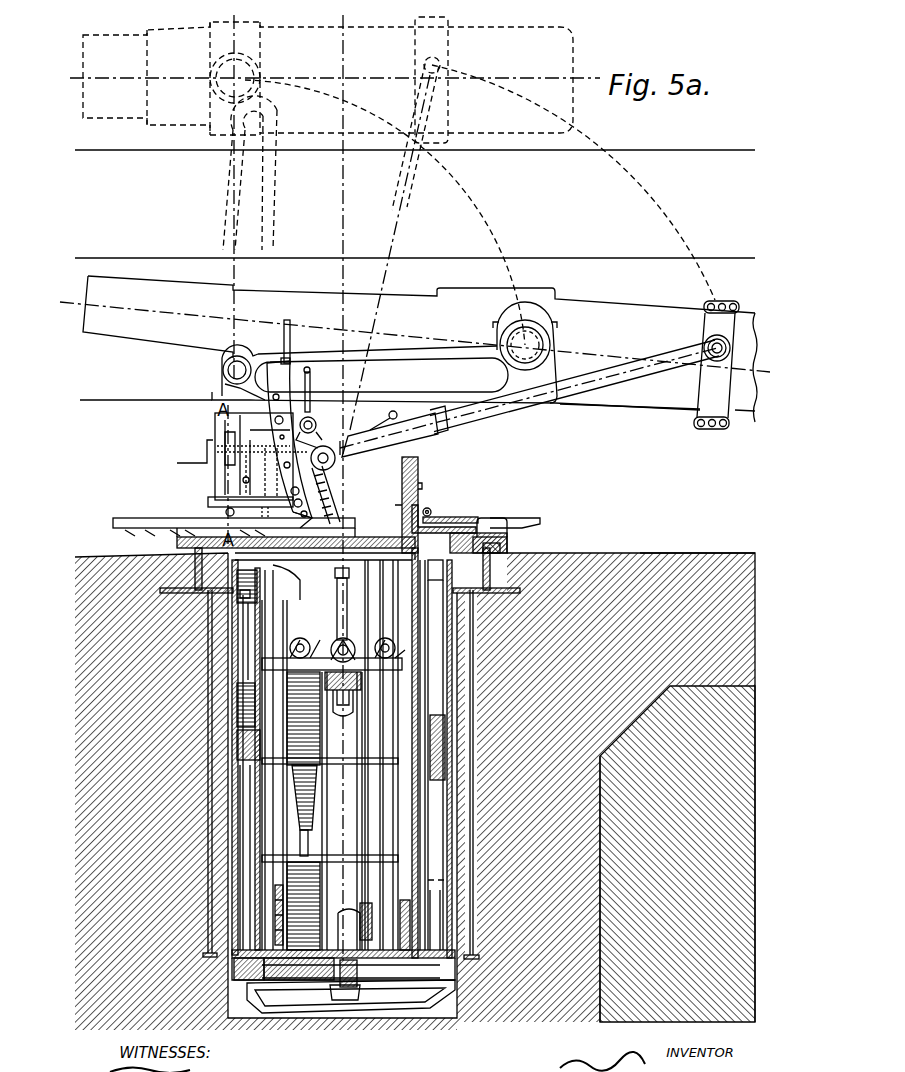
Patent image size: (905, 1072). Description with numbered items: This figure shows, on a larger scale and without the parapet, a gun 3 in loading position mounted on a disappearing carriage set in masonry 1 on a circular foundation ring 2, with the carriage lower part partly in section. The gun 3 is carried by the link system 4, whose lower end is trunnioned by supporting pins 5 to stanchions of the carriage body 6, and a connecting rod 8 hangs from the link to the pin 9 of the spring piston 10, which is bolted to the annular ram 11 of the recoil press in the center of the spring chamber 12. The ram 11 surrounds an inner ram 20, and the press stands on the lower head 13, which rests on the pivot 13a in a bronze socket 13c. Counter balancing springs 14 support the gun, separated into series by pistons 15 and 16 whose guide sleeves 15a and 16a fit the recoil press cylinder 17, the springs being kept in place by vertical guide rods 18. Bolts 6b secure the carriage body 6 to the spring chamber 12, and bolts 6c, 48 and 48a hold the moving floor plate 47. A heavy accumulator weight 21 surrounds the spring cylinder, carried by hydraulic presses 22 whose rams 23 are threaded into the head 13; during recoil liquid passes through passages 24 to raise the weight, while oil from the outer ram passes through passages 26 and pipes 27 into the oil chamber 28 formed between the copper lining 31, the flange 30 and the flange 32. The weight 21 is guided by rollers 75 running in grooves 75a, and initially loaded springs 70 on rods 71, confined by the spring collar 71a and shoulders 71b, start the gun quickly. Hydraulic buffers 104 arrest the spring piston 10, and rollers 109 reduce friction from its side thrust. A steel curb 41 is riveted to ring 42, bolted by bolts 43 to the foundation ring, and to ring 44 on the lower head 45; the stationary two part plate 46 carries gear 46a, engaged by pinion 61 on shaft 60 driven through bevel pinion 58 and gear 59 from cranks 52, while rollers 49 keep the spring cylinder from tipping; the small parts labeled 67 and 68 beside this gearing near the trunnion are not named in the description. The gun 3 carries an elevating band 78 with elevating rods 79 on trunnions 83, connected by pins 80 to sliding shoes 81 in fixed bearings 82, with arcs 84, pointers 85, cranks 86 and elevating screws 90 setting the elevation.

The masonry 1 is at (600, 557).
The bed plate or foundation ring 2 is at (507, 545).
The gun 3 is at (420, 349).
The link system 4 is at (403, 352).
The supporting pins 5 is at (222, 369).
The carriage body 6 is at (394, 430).
The bolts 6b is at (420, 471).
The bolts 6c is at (210, 497).
The connecting rod 8 is at (346, 592).
The pin 9 is at (343, 650).
The spring piston 10 is at (398, 666).
The ram 11 is at (353, 711).
The spring chamber 12 is at (272, 825).
The lower head 13 is at (373, 947).
The pivot 13a is at (336, 992).
The bronze socket 13c is at (338, 1005).
The counter balancing springs 14 is at (314, 822).
The piston 15 is at (372, 758).
The guide sleeve 15a is at (342, 811).
The piston 16 is at (373, 855).
The guide sleeve 16a is at (321, 906).
The recoil press cylinder 17 is at (320, 718).
The vertical guide rods 18 is at (300, 844).
The inner ram 20 is at (353, 694).
The counter balancing weight 21 is at (263, 567).
The hydraulic presses 22 is at (548, 556).
The rams 23 is at (432, 807).
The passages 24 is at (376, 963).
The passages 26 is at (310, 957).
The pipes 27 is at (260, 958).
The oil chamber 28 is at (275, 912).
The flange 30 is at (280, 600).
The copper lining 31 is at (282, 797).
The flange 32 is at (275, 897).
The steel curb 41 is at (235, 652).
The ring 42 is at (453, 538).
The bolts 43 is at (482, 520).
The ring 44 is at (443, 997).
The lower head 45 is at (387, 1007).
The two part plate 46 is at (448, 526).
The gear 46a is at (432, 502).
The two part plate 47 is at (532, 520).
The bolts 48 is at (431, 508).
The bolts 48a is at (224, 511).
The rollers 49 is at (322, 543).
The cranks 52 is at (197, 462).
The bevel pinion 58 is at (242, 445).
The gear 59 is at (248, 460).
The shaft 60 is at (255, 472).
The pinion 61 is at (270, 518).
The lever 67 is at (222, 464).
The bracket 68 is at (263, 398).
The initially loaded springs 70 is at (237, 602).
The rods 71 is at (245, 861).
The spring collar 71a is at (237, 730).
The shoulders 71b is at (235, 767).
The rollers 75 is at (412, 567).
The grooves 75a is at (425, 797).
The elevating band 78 is at (716, 365).
The elevating rods 79 is at (530, 408).
The pins 80 is at (315, 445).
The sliding shoes 81 is at (335, 462).
The fixed bearings 82 is at (289, 439).
The trunnions 83 is at (730, 351).
The arcs 84 is at (291, 340).
The pointers 85 is at (283, 372).
The cranks 86 is at (310, 372).
The elevating screws 90 is at (313, 522).
The hydraulic buffers 104 is at (371, 905).
The rollers 109 is at (655, 553).